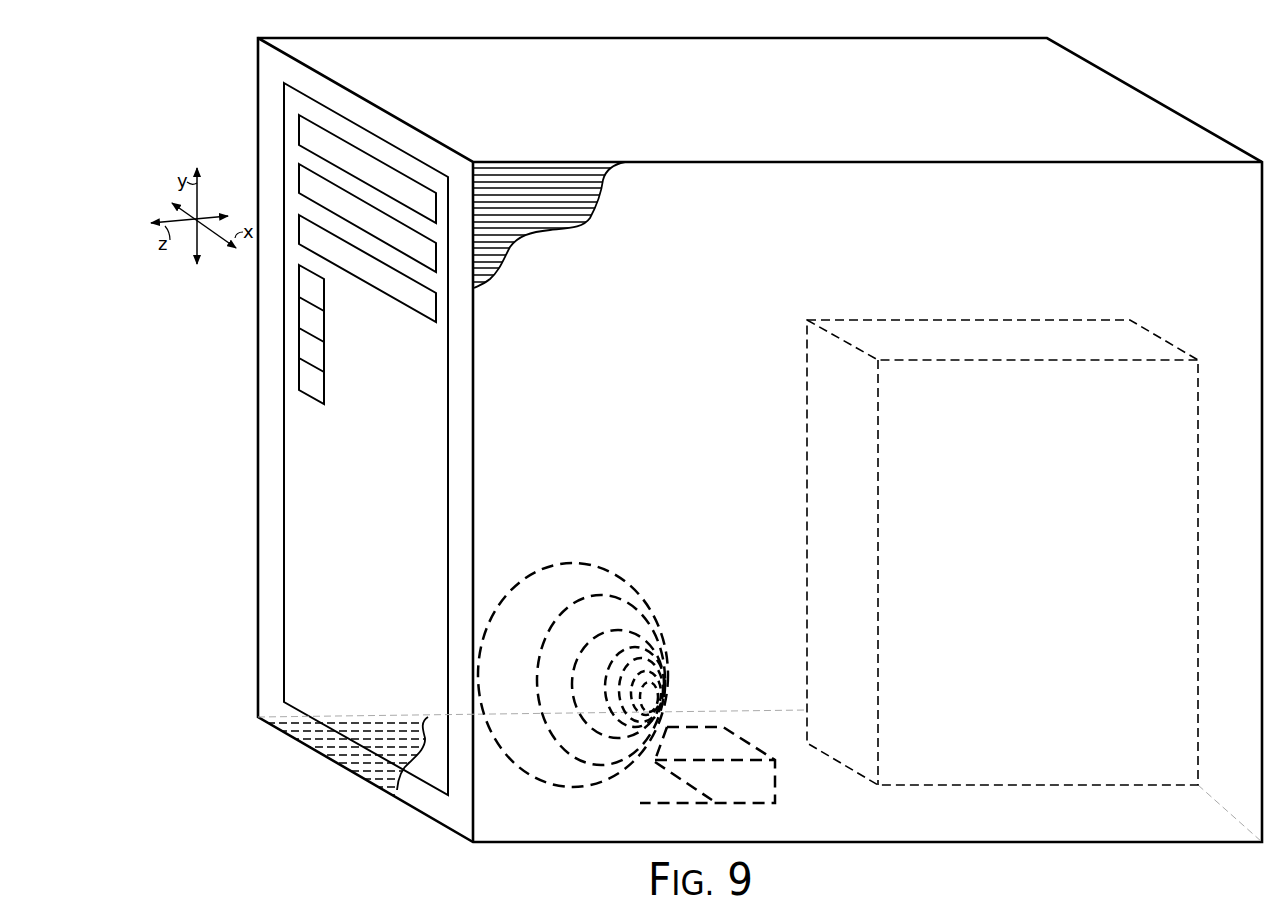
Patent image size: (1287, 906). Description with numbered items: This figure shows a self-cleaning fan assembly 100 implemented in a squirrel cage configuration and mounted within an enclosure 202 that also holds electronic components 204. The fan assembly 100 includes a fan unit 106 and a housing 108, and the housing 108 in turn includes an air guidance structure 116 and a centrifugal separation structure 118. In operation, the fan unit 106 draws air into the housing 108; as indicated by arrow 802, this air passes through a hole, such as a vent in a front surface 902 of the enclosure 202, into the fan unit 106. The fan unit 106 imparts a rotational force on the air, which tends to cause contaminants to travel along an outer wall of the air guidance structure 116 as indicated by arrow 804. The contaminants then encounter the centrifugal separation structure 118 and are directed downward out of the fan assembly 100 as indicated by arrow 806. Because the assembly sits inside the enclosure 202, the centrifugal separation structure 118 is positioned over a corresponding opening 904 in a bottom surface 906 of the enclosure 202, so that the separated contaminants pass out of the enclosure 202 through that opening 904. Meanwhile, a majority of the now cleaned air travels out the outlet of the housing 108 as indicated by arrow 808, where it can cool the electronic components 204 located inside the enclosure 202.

The enclosure 202 is at (257, 138).
The front surface 902 is at (552, 213).
The bottom surface 906 is at (410, 745).
The electronic components 204 is at (1080, 520).
The self-cleaning fan assembly 100 is at (635, 618).
The air guidance structure 116 is at (542, 562).
The housing 108 is at (642, 608).
The fan unit 106 is at (699, 672).
The centrifugal separation structure 118 is at (731, 826).
The air intake arrow 802 is at (657, 700).
The contaminant path arrow 804 is at (606, 789).
The contaminant discharge arrow 806 is at (690, 828).
The cleaned air outlet arrow 808 is at (842, 768).
The opening 904 is at (678, 821).